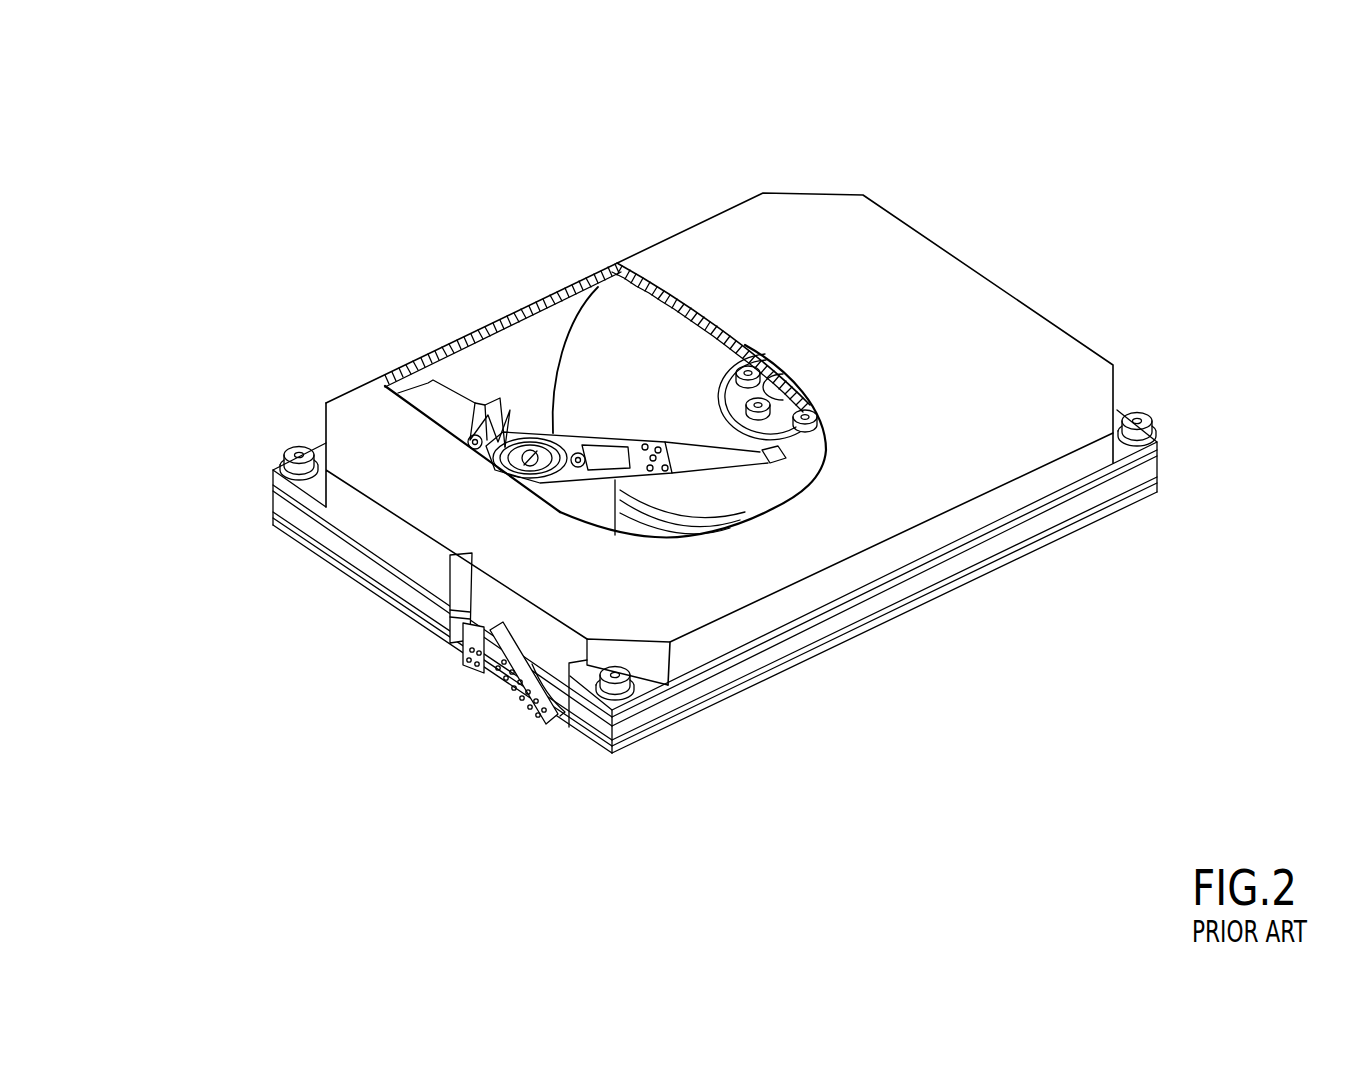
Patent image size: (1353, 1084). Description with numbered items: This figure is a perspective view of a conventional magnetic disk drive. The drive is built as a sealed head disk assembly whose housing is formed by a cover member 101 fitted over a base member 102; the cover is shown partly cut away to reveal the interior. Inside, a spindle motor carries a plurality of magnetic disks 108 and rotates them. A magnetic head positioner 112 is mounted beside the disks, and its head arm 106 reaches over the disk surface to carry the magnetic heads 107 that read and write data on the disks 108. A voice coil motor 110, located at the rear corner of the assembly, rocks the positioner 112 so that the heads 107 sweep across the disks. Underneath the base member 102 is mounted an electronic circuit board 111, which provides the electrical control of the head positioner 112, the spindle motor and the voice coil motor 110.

The cover member 101 is at (1043, 316).
The base member 102 is at (272, 498).
The head arm 106 is at (712, 481).
The magnetic heads 107 is at (776, 388).
The magnetic disks 108 is at (598, 280).
The voice coil motor 110 is at (447, 378).
The electronic circuit board 111 is at (400, 610).
The positioner 112 is at (580, 497).